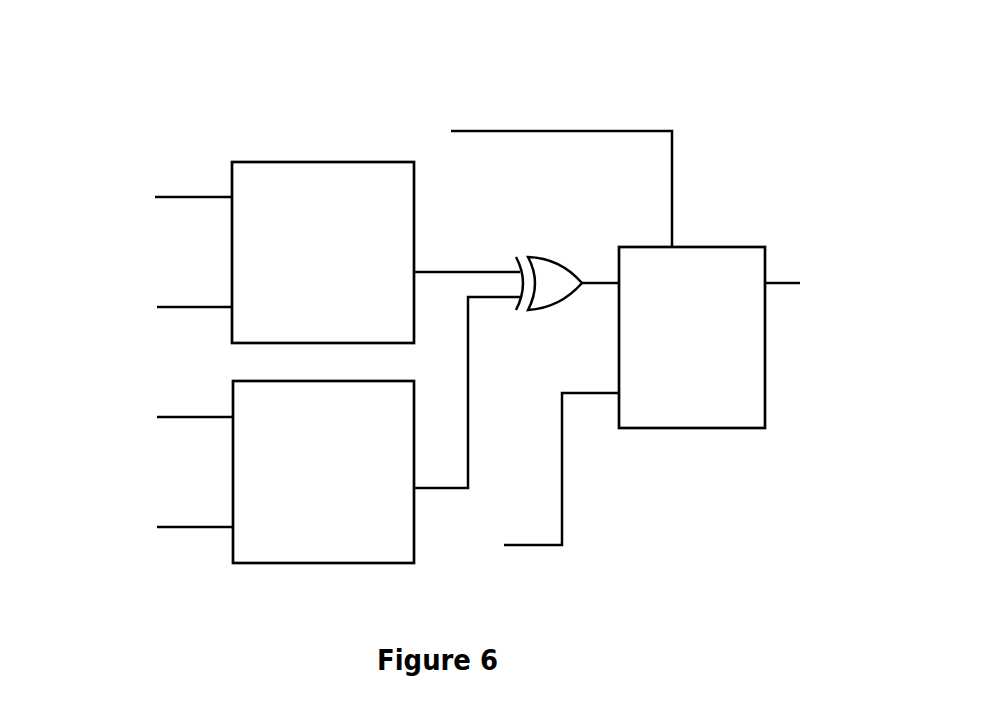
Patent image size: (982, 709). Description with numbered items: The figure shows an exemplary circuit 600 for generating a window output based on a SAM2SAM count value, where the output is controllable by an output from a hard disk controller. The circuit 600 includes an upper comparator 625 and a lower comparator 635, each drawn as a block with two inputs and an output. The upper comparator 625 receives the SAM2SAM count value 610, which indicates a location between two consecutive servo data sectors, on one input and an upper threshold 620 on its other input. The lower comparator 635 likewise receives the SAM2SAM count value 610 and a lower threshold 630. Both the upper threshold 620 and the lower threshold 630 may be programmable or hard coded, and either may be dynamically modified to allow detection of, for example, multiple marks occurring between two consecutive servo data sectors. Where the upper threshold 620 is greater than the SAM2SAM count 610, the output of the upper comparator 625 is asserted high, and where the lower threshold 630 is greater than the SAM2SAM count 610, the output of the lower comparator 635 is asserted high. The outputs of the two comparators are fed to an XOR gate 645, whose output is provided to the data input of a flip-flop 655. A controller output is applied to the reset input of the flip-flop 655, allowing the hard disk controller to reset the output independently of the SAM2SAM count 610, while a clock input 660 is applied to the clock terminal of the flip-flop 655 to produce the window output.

The circuit 600 is at (156, 86).
The SAM2SAM count value 610 is at (100, 190).
The upper threshold 620 is at (150, 300).
The upper comparator 625 is at (340, 337).
The lower threshold 630 is at (151, 518).
The lower comparator 635 is at (341, 556).
The XOR gate 645 is at (541, 256).
The flip-flop 655 is at (756, 417).
The clock input 660 is at (537, 547).